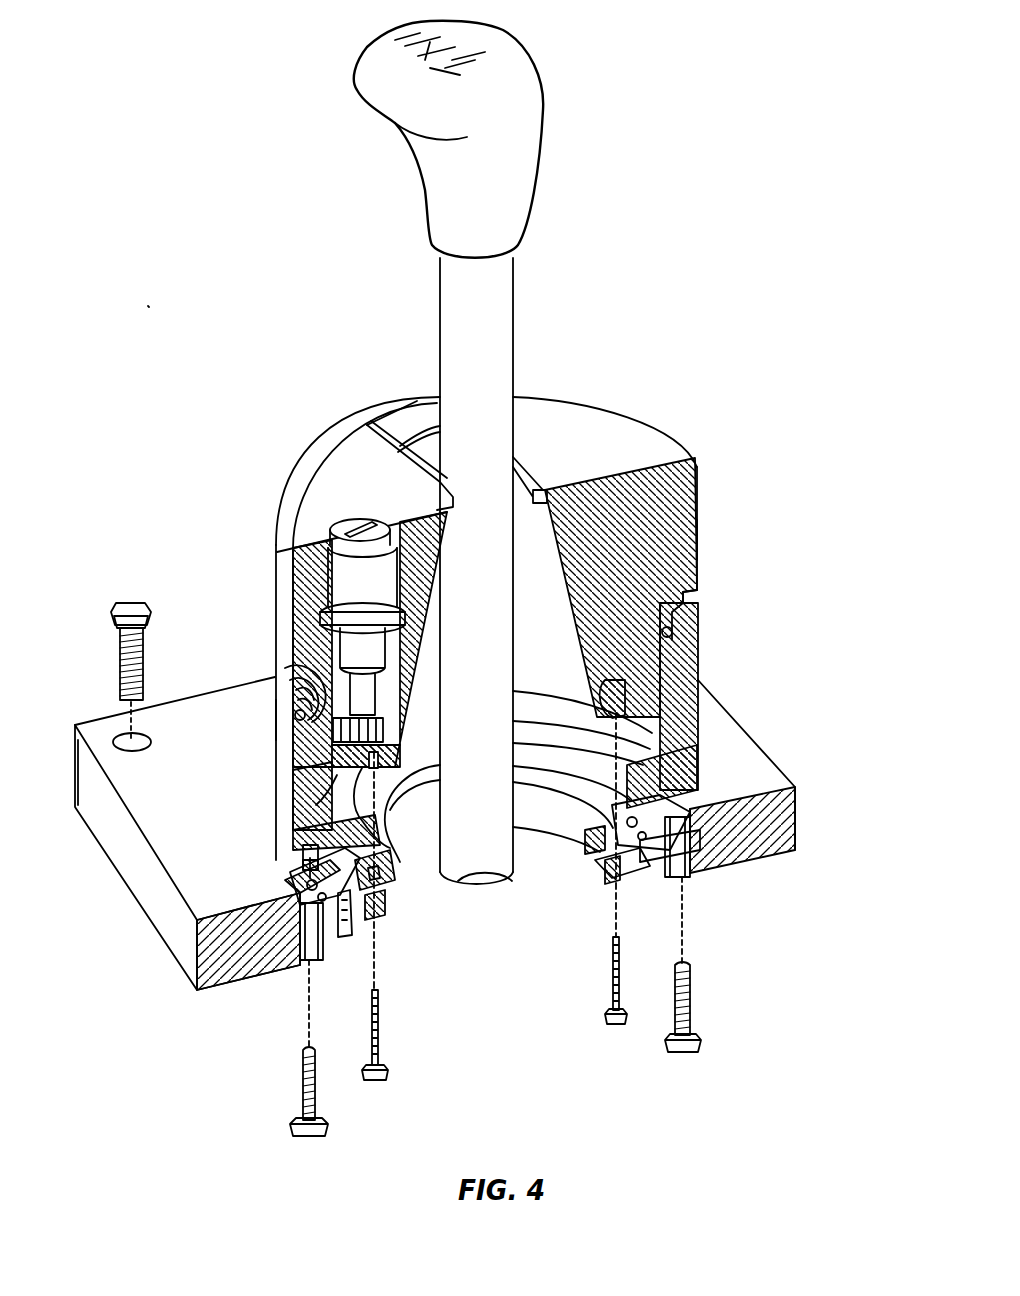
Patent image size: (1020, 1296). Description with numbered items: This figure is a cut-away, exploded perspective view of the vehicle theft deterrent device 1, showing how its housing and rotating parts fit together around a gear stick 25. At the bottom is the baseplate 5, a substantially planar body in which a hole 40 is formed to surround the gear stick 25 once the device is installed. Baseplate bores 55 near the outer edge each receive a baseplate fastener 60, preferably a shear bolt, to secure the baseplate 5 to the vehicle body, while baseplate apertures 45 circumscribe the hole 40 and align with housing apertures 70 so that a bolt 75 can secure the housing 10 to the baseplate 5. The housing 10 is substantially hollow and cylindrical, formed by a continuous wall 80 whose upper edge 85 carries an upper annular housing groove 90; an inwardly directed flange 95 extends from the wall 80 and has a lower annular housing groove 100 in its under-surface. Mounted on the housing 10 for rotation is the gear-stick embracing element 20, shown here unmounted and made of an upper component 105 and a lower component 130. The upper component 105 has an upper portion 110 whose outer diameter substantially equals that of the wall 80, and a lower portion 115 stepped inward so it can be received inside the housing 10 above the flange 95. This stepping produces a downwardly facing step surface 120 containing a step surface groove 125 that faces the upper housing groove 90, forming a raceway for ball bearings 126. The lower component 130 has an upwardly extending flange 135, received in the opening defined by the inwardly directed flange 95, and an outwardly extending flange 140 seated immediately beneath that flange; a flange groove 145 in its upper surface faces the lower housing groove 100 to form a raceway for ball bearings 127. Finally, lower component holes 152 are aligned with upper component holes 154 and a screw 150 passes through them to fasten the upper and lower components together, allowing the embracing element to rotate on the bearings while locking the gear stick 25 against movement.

The vehicle theft deterrent device 1 is at (148, 306).
The baseplate 5 is at (108, 868).
The housing 10 is at (268, 726).
The gear-stick embracing element 20 is at (700, 508).
The gear stick 25 is at (438, 312).
The hole 40 is at (518, 829).
The baseplate apertures 45 is at (310, 980).
The baseplate bores 55 is at (128, 735).
The baseplate fastener 60 is at (108, 618).
The housing apertures 70 is at (700, 770).
The bolt 75 is at (309, 1138).
The wall 80 is at (305, 806).
The upper edge 85 is at (275, 692).
The upper annular housing groove 90 is at (292, 688).
The inwardly directed flange 95 is at (383, 858).
The lower annular housing groove 100 is at (312, 834).
The upper component 105 is at (347, 445).
The upper portion 110 is at (700, 530).
The lower portion 115 is at (640, 662).
The downwardly facing step surface 120 is at (700, 600).
The step surface groove 125 is at (688, 612).
The ball bearings 126 is at (676, 640).
The ball bearings 127 is at (295, 897).
The lower component 130 is at (620, 895).
The upwardly extending flange 135 is at (590, 840).
The outwardly extending flange 140 is at (640, 880).
The flange groove 145 is at (340, 938).
The screw 150 is at (378, 1085).
The lower component holes 152 is at (393, 908).
The upper component holes 154 is at (300, 755).